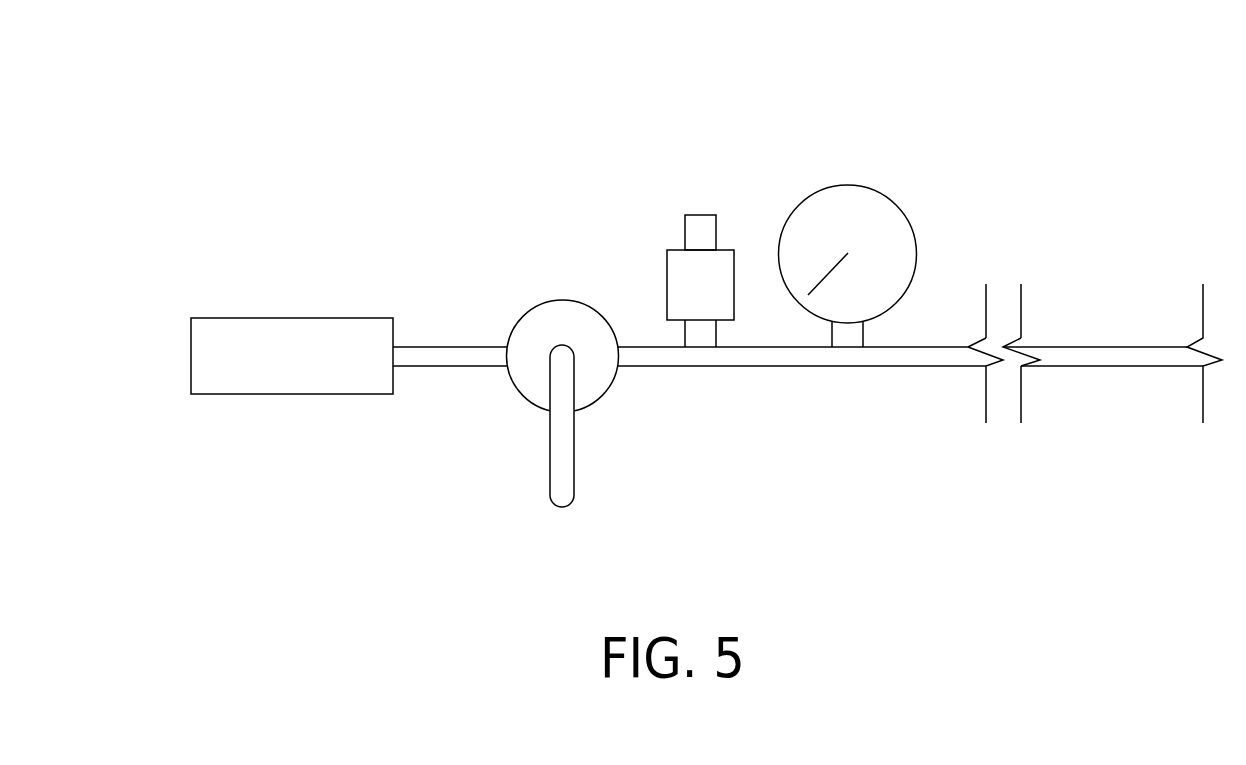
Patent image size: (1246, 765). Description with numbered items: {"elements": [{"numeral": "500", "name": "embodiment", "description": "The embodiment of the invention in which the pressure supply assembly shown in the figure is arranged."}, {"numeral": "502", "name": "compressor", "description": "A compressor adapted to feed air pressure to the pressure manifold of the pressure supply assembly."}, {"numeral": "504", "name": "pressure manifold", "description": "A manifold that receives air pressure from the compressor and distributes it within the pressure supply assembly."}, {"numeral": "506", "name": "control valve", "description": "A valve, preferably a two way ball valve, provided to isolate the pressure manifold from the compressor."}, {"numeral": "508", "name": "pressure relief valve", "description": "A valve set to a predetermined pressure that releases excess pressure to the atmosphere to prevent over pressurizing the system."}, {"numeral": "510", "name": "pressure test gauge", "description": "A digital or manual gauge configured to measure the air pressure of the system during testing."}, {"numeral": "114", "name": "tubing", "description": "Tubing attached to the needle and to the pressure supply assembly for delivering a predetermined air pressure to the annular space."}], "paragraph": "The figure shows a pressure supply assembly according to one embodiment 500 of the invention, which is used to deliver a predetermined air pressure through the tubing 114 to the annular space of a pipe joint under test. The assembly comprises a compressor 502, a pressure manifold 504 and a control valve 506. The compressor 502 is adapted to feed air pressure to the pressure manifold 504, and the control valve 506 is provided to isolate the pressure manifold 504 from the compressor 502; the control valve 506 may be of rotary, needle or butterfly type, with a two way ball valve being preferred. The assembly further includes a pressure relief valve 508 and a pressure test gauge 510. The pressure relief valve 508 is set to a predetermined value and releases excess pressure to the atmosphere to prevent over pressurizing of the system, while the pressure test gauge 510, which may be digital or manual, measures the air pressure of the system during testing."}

The pressure testing system 500 is at (412, 65).
The pressure source 502 is at (293, 318).
The conduit 504 is at (755, 366).
The valve 506 is at (563, 300).
The regulator 508 is at (701, 215).
The pressure gauge 510 is at (848, 185).
The tube 114 is at (1125, 366).